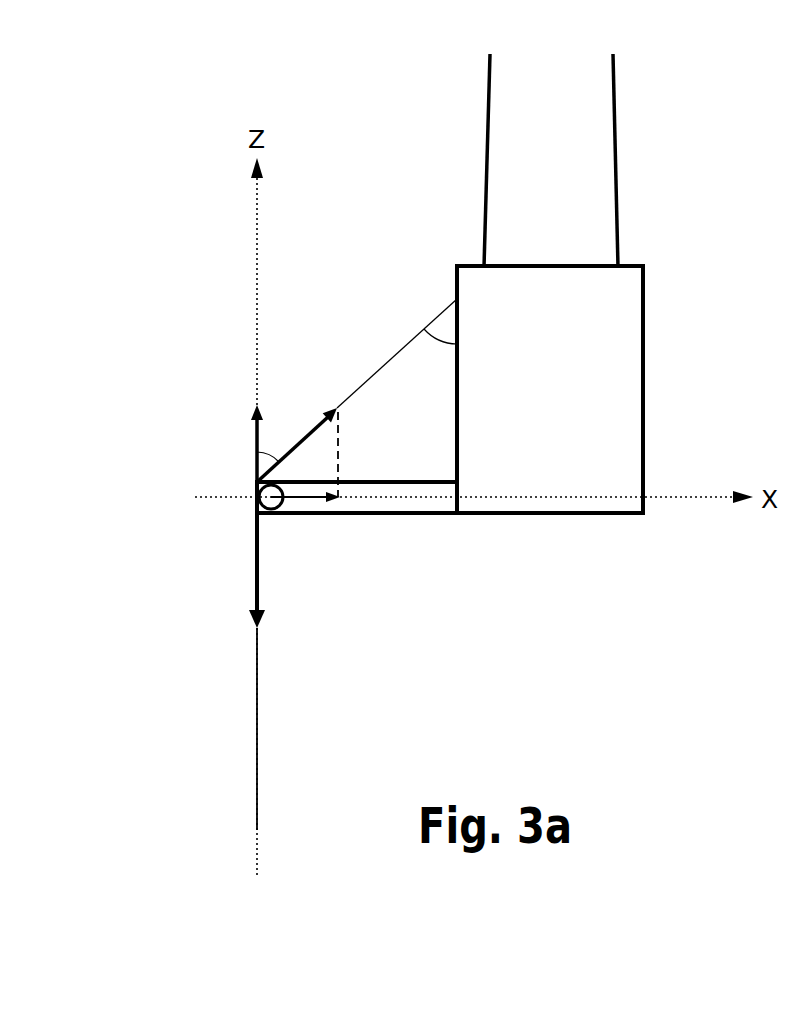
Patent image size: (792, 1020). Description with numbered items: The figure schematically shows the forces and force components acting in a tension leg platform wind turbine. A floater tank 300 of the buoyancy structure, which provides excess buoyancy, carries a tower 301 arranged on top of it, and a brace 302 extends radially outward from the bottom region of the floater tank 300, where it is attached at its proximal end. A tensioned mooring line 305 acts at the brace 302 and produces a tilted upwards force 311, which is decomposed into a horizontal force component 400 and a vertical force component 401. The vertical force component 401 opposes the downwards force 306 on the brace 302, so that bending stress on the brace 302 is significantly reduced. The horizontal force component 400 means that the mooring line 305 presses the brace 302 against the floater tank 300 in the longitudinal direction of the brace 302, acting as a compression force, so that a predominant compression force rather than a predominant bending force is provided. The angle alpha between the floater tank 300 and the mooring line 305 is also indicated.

The floater tank 300 is at (608, 348).
The tower 301 is at (570, 192).
The brace 302 is at (382, 514).
The tensioned mooring line 305 is at (257, 760).
The downwards force 306 is at (255, 553).
The tilted upwards force 311 is at (308, 437).
The horizontal force component 400 is at (300, 503).
The vertical force component 401 is at (255, 445).